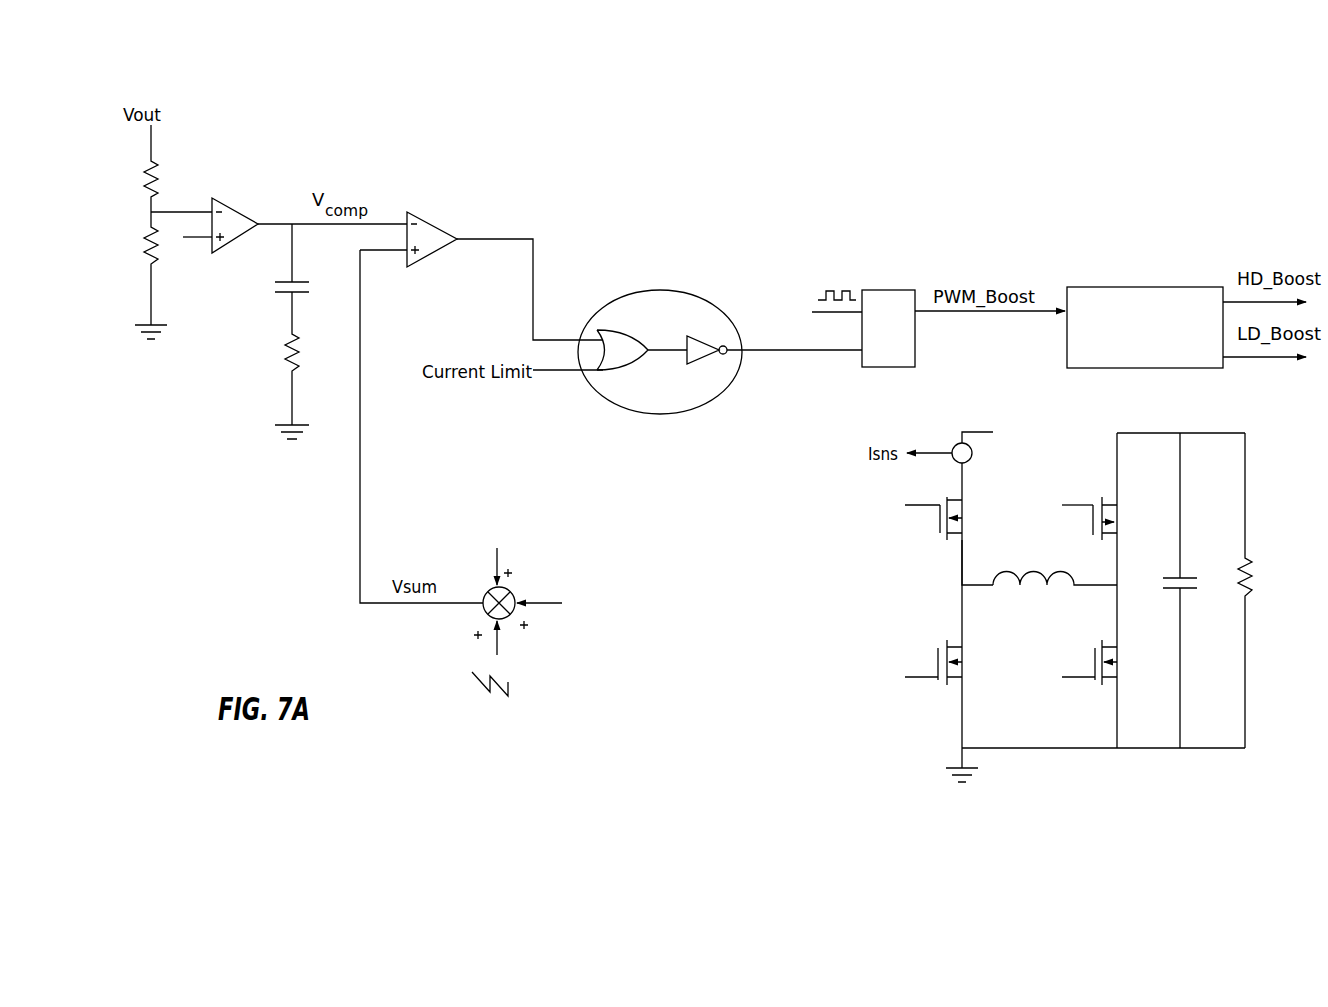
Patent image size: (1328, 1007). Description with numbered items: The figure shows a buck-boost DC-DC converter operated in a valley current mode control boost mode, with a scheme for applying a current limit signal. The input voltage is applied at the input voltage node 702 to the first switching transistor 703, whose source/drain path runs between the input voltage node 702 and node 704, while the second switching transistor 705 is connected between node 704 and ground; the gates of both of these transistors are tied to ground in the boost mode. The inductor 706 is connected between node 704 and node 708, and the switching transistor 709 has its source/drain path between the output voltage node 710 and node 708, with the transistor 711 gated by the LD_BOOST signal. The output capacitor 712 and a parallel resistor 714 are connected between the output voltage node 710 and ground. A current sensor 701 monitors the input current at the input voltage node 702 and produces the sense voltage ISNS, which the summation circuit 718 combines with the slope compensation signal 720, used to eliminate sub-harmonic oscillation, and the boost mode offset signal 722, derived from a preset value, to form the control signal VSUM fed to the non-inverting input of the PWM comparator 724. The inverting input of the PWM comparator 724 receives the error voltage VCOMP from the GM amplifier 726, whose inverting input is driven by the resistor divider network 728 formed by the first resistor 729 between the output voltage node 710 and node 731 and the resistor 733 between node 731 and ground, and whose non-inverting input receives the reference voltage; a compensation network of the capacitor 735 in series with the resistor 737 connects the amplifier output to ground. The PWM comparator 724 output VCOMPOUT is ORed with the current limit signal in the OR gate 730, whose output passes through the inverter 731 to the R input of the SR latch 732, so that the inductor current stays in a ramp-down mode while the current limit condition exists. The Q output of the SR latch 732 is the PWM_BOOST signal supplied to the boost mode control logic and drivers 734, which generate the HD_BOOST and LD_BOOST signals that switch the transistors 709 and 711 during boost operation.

The current sensor 701 is at (957, 445).
The input voltage node 702 is at (993, 432).
The first switching transistor 703 is at (932, 520).
The node 704 is at (962, 585).
The second switching transistor 705 is at (940, 685).
The inductor 706 is at (1010, 580).
The node 708 is at (1117, 585).
The switching transistor 709 is at (1118, 525).
The output voltage node 710 is at (1245, 433).
The transistor 711 is at (1117, 665).
The output capacitor 712 is at (1185, 592).
The resistor 714 is at (1268, 582).
The summation circuit 718 is at (515, 590).
The slope compensation signal 720 is at (497, 697).
The boost mode offset signal 722 is at (493, 540).
The PWM comparator 724 is at (435, 255).
The GM amplifier 726 is at (260, 224).
The resistor divider network 728 is at (103, 270).
The first resistor 729 is at (150, 160).
The OR gate 730 is at (630, 370).
The node / inverter 731 is at (150, 216).
The SR latch 732 is at (916, 360).
The resistor 733 is at (150, 272).
The boost mode control logic and drivers 734 is at (1160, 287).
The capacitor 735 is at (310, 288).
The resistor 737 is at (288, 373).